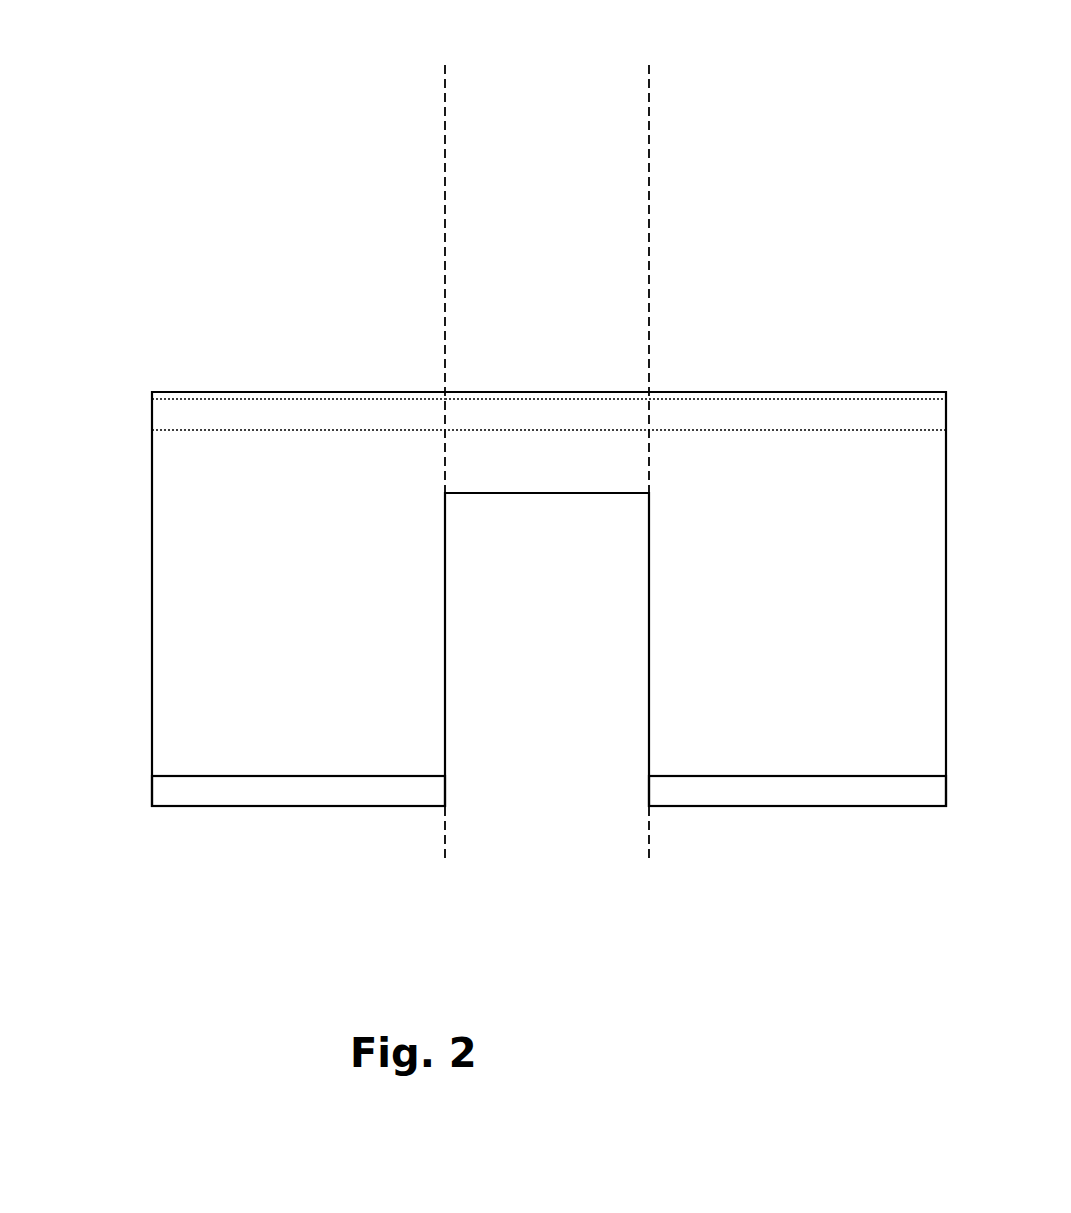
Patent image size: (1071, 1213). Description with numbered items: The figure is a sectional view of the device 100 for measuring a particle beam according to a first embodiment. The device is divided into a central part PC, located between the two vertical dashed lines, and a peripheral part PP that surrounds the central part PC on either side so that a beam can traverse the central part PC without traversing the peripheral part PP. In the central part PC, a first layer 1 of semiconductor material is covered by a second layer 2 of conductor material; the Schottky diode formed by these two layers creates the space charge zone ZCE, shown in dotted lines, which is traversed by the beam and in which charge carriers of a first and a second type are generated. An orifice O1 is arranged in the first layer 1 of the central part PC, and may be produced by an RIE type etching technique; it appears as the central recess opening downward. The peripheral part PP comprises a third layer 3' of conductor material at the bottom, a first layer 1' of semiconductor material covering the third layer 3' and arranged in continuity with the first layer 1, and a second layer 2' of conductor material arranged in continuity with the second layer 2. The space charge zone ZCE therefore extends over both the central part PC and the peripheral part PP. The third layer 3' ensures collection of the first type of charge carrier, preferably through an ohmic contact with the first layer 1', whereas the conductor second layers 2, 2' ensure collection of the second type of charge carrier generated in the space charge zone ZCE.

The device for measuring a particle beam 100 is at (123, 61).
The first layer 1 is at (547, 384).
The first layer 1' is at (488, 628).
The second layer 2 is at (547, 324).
The second layer 2' is at (549, 323).
The third layer 3' is at (541, 871).
The space charge zone ZCE is at (593, 417).
The orifice O1 is at (489, 827).
The peripheral part PP is at (535, 453).
The central part PC is at (547, 269).